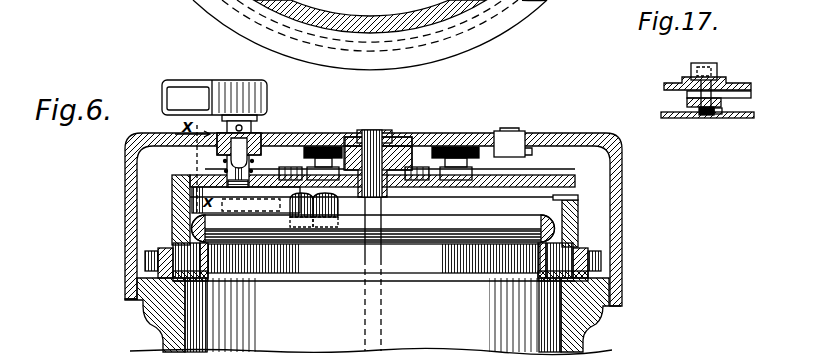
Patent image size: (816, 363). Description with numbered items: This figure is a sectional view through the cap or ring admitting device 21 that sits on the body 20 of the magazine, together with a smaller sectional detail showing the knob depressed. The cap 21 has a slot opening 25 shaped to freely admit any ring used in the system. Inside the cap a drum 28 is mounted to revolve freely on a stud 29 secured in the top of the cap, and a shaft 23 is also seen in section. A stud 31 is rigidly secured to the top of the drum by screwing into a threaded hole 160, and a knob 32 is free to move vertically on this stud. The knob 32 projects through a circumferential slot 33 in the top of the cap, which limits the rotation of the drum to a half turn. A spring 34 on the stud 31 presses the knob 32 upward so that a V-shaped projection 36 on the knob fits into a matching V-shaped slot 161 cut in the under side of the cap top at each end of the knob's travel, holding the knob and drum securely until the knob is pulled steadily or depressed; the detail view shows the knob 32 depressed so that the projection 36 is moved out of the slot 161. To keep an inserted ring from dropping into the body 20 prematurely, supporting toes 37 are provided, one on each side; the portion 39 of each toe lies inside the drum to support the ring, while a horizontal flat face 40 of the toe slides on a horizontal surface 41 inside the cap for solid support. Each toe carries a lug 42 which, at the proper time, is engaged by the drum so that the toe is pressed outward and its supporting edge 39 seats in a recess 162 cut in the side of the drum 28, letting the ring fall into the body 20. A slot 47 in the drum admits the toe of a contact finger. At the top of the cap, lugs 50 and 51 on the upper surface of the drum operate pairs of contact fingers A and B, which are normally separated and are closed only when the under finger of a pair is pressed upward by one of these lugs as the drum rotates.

In FIG. 6, the body 20 is at (373, 316).
In FIG. 6, the cap 21 is at (598, 133).
In FIG. 17, the cap 21 is at (684, 77).
In FIG. 6, the shaft 23 is at (373, 228).
In FIG. 6, the slot opening 25 is at (549, 1).
In FIG. 6, the drum 28 is at (173, 221).
In FIG. 17, the drum 28 is at (757, 120).
In FIG. 6, the stud 29 is at (383, 140).
In FIG. 6, the stud 31 is at (255, 150).
In FIG. 17, the stud 31 is at (705, 116).
In FIG. 6, the knob 32 is at (222, 80).
In FIG. 17, the knob 32 is at (713, 63).
In FIG. 6, the circumferential slot 33 is at (504, 134).
In FIG. 6, the spring 34 is at (229, 164).
In FIG. 17, the spring 34 is at (715, 118).
In FIG. 6, the V-shaped projection 36 is at (217, 150).
In FIG. 17, the V-shaped projection 36 is at (690, 103).
In FIG. 6, the supporting toe 37 is at (272, 263).
In FIG. 6, the supporting edge 39 is at (200, 263).
In FIG. 6, the horizontal flat face 40 is at (196, 282).
In FIG. 6, the horizontal surface 41 is at (126, 268).
In FIG. 6, the lug 42 is at (600, 262).
In FIG. 6, the slot 47 is at (560, 200).
In FIG. 6, the lug 50 is at (291, 167).
In FIG. 6, the lug 51 is at (455, 160).
In FIG. 6, the threaded hole 160 is at (246, 202).
In FIG. 6, the V-shaped slot 161 is at (526, 152).
In FIG. 17, the V-shaped slot 161 is at (687, 95).
In FIG. 6, the recess 162 is at (548, 284).
In FIG. 6, the contact fingers A is at (323, 150).
In FIG. 6, the contact fingers B is at (449, 149).